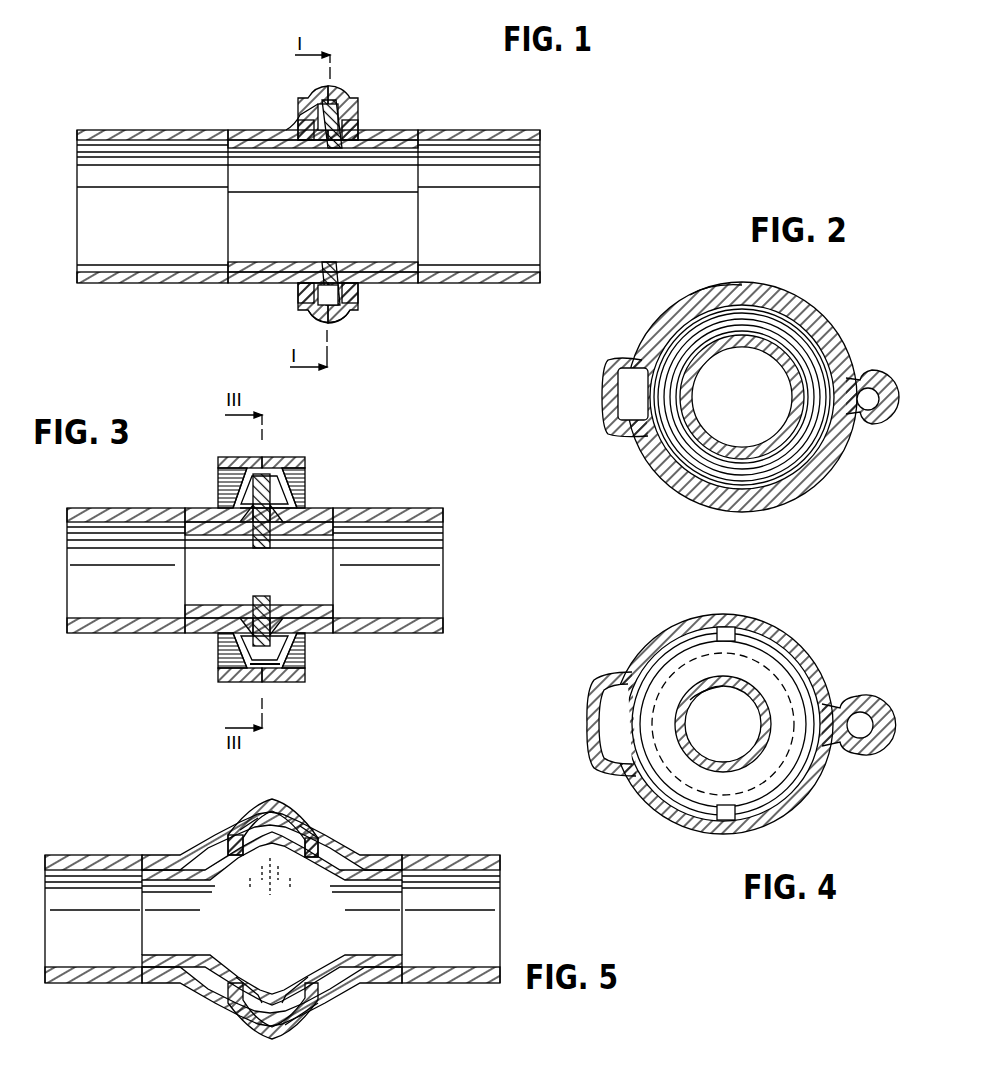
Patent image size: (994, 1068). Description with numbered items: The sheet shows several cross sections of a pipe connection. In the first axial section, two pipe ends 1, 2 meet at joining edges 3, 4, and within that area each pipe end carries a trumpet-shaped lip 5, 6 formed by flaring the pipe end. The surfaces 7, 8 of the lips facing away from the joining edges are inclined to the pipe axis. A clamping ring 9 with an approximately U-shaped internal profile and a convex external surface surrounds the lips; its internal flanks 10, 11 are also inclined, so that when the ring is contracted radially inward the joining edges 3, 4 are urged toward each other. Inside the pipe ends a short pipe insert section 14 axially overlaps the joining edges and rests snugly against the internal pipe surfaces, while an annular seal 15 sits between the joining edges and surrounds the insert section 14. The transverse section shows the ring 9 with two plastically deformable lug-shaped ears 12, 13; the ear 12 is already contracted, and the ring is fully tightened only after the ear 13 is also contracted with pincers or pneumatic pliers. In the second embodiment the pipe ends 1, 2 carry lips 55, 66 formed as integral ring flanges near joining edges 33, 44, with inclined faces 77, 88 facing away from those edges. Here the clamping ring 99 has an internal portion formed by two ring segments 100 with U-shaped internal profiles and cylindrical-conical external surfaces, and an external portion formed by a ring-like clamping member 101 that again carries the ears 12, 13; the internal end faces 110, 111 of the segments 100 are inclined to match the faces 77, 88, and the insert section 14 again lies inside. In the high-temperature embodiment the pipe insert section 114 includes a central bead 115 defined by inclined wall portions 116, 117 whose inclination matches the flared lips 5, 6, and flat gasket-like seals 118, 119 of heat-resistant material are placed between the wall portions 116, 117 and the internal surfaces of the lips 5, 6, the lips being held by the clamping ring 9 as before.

In FIG. 1, the pipe end 1 is at (165, 130).
In FIG. 3, the pipe end 1 is at (100, 508).
In FIG. 5, the pipe end 1 is at (100, 855).
In FIG. 1, the pipe end 2 is at (505, 130).
In FIG. 2, the pipe end 2 is at (800, 362).
In FIG. 3, the pipe end 2 is at (420, 508).
In FIG. 5, the pipe end 2 is at (440, 855).
In FIG. 1, the joining edge 3 is at (315, 97).
In FIG. 1, the joining edge 4 is at (340, 102).
In FIG. 2, the joining edge 4 is at (705, 297).
In FIG. 1, the lip 5 is at (300, 290).
In FIG. 5, the lip 5 is at (243, 838).
In FIG. 1, the lip 6 is at (360, 290).
In FIG. 5, the lip 6 is at (318, 846).
In FIG. 1, the lip surface 7 is at (298, 120).
In FIG. 5, the lip surface 7 is at (228, 842).
In FIG. 1, the lip surface 8 is at (358, 120).
In FIG. 5, the lip surface 8 is at (296, 832).
In FIG. 1, the clamping ring 9 is at (343, 325).
In FIG. 2, the clamping ring 9 is at (805, 305).
In FIG. 5, the clamping ring 9 is at (290, 807).
In FIG. 1, the internal flank 10 is at (300, 305).
In FIG. 1, the internal flank 11 is at (360, 305).
In FIG. 2, the lug-shaped ear 12 is at (882, 373).
In FIG. 4, the lug-shaped ear 12 is at (853, 758).
In FIG. 2, the lug-shaped ear 13 is at (605, 397).
In FIG. 4, the lug-shaped ear 13 is at (598, 766).
In FIG. 1, the pipe insert section 14 is at (228, 212).
In FIG. 2, the pipe insert section 14 is at (715, 443).
In FIG. 3, the pipe insert section 14 is at (320, 590).
In FIG. 4, the pipe insert section 14 is at (720, 756).
In FIG. 1, the annular seal 15 is at (334, 262).
In FIG. 3, the annular seal 15 is at (256, 540).
In FIG. 3, the joining edge 33 is at (242, 538).
In FIG. 3, the joining edge 44 is at (280, 538).
In FIG. 4, the joining edge 44 is at (735, 671).
In FIG. 3, the lip 55 is at (243, 628).
In FIG. 3, the lip 66 is at (270, 628).
In FIG. 4, the lip 66 is at (693, 662).
In FIG. 3, the lip face 77 is at (225, 487).
In FIG. 3, the lip face 88 is at (283, 487).
In FIG. 3, the clamping ring 99 is at (230, 667).
In FIG. 4, the clamping ring 99 is at (775, 640).
In FIG. 3, the ring segment 100 is at (295, 655).
In FIG. 4, the ring segment 100 is at (673, 820).
In FIG. 3, the ring-like clamping member 101 is at (298, 680).
In FIG. 4, the ring-like clamping member 101 is at (750, 622).
In FIG. 3, the internal end face 110 is at (222, 652).
In FIG. 3, the internal end face 111 is at (268, 682).
In FIG. 5, the pipe insert section 114 is at (390, 945).
In FIG. 5, the bead 115 is at (283, 878).
In FIG. 5, the inclined wall portion 116 is at (246, 975).
In FIG. 5, the inclined wall portion 117 is at (290, 975).
In FIG. 5, the flat gasket-like seal 118 is at (255, 1025).
In FIG. 5, the flat gasket-like seal 119 is at (285, 1025).